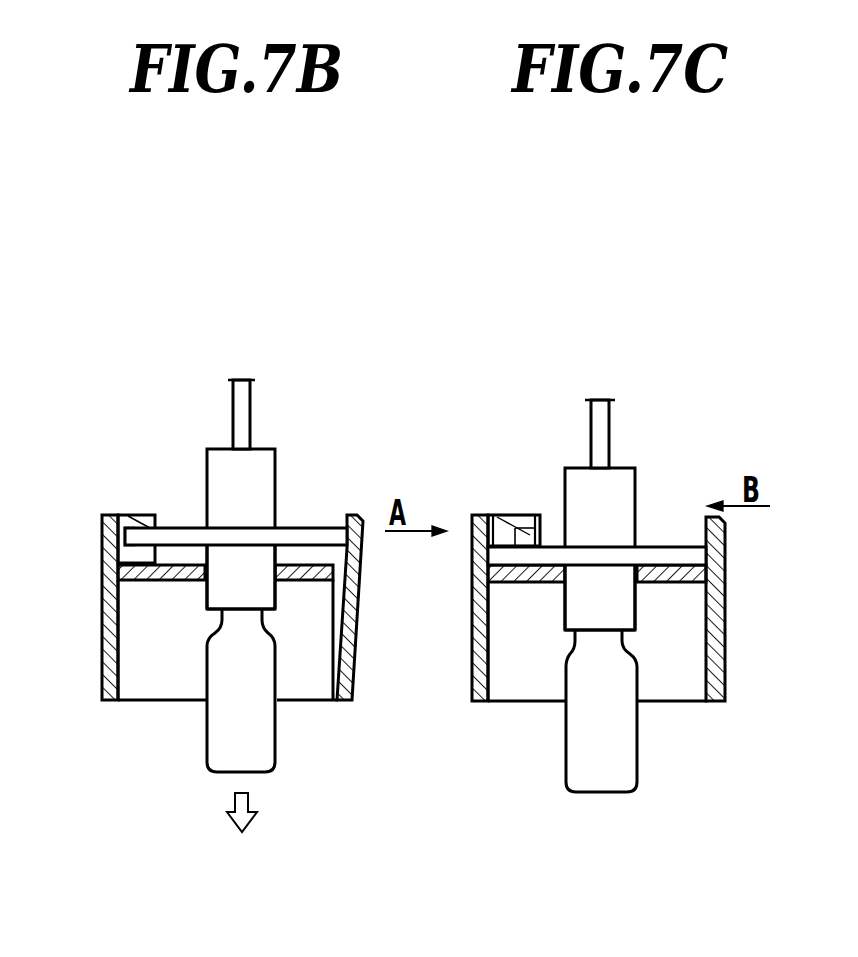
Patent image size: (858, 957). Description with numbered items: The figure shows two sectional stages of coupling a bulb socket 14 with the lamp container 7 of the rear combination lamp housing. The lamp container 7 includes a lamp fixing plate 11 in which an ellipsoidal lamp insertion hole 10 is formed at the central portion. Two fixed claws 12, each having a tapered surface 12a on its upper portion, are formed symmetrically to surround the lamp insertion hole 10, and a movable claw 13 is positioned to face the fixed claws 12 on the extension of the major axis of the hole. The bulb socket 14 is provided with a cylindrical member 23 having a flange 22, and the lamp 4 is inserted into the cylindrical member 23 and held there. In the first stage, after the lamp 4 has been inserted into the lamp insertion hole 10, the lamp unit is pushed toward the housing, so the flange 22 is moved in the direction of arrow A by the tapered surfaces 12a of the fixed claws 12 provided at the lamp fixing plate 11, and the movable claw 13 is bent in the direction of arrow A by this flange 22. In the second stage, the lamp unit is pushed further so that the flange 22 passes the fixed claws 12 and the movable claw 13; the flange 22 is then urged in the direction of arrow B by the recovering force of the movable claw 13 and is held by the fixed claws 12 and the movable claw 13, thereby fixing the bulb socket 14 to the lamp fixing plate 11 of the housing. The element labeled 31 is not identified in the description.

In FIG. 7B, the lamp 4 is at (260, 717).
In FIG. 7C, the lamp 4 is at (625, 735).
In FIG. 7B, the lamp container 7 is at (176, 640).
In FIG. 7C, the lamp container 7 is at (546, 704).
In FIG. 7B, the lamp insertion hole 10 is at (225, 621).
In FIG. 7C, the lamp insertion hole 10 is at (597, 598).
In FIG. 7B, the lamp fixing plate 11 is at (136, 640).
In FIG. 7C, the lamp fixing plate 11 is at (510, 641).
In FIG. 7B, the fixed claw 12 is at (111, 493).
In FIG. 7C, the fixed claw 12 is at (493, 484).
In FIG. 7B, the tapered surface 12a is at (148, 484).
In FIG. 7C, the tapered surface 12a is at (521, 484).
In FIG. 7B, the movable claw 13 is at (214, 559).
In FIG. 7C, the movable claw 13 is at (598, 554).
In FIG. 7B, the bulb socket 14 is at (186, 491).
In FIG. 7C, the bulb socket 14 is at (562, 498).
In FIG. 7B, the flange 22 is at (246, 486).
In FIG. 7C, the flange 22 is at (604, 502).
In FIG. 7B, the cylindrical member 23 is at (267, 595).
In FIG. 7C, the cylindrical member 23 is at (631, 617).
In FIG. 7B, the shaft 31 is at (272, 404).
In FIG. 7C, the shaft 31 is at (634, 420).